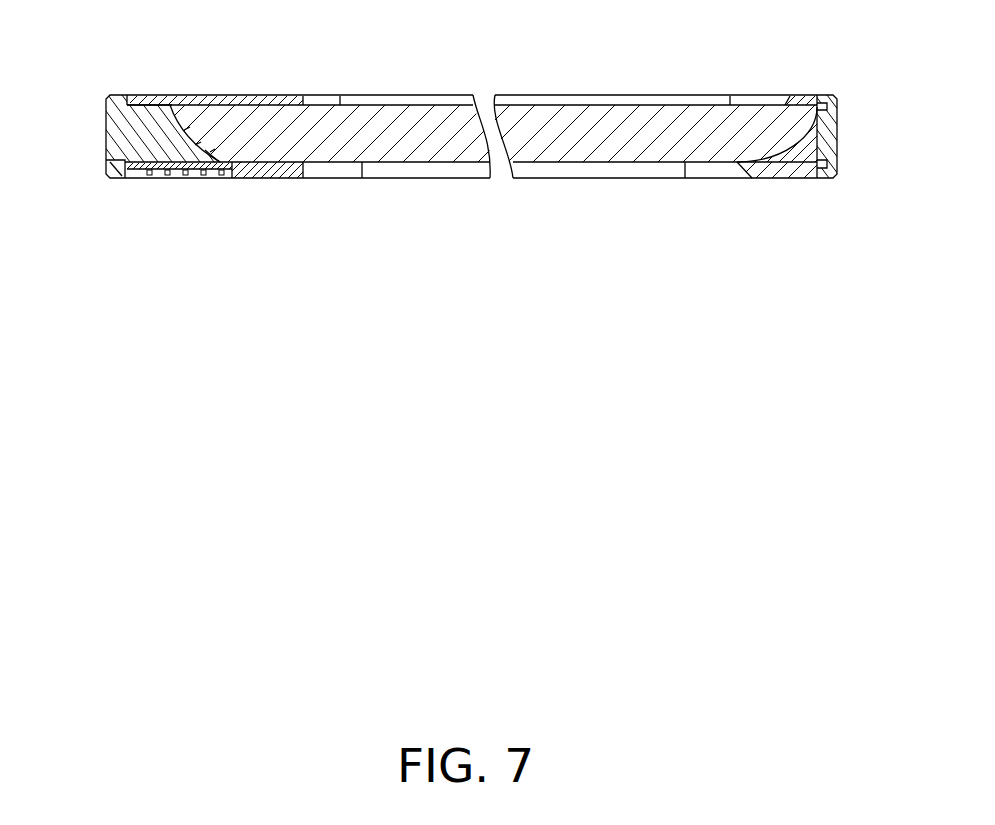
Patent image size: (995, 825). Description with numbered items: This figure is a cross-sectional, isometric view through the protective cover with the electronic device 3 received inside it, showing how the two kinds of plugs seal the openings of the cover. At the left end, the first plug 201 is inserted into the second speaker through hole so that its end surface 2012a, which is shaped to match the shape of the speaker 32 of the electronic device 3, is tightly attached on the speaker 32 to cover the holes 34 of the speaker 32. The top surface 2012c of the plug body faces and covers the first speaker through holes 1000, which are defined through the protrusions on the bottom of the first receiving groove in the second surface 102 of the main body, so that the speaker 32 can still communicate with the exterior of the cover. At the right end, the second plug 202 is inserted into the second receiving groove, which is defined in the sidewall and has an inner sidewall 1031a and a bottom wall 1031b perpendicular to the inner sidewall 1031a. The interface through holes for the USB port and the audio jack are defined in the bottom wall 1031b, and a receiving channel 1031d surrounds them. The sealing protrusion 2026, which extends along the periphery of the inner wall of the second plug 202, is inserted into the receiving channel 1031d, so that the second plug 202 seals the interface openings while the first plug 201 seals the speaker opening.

The electronic device 3 is at (424, 124).
The first plug 201 is at (128, 144).
The holes of the speaker 34 is at (177, 118).
The end surface 2012a is at (171, 124).
The speaker 32 is at (213, 147).
The top surface 2012c is at (110, 161).
The first speaker through holes 1000 is at (165, 178).
The second surface 102 is at (254, 178).
The second plug 202 is at (828, 137).
The sealing protrusion 2026 is at (870, 92).
The inner sidewall 1031a is at (820, 106).
The bottom wall 1031b is at (813, 136).
The receiving channel 1031d is at (837, 160).